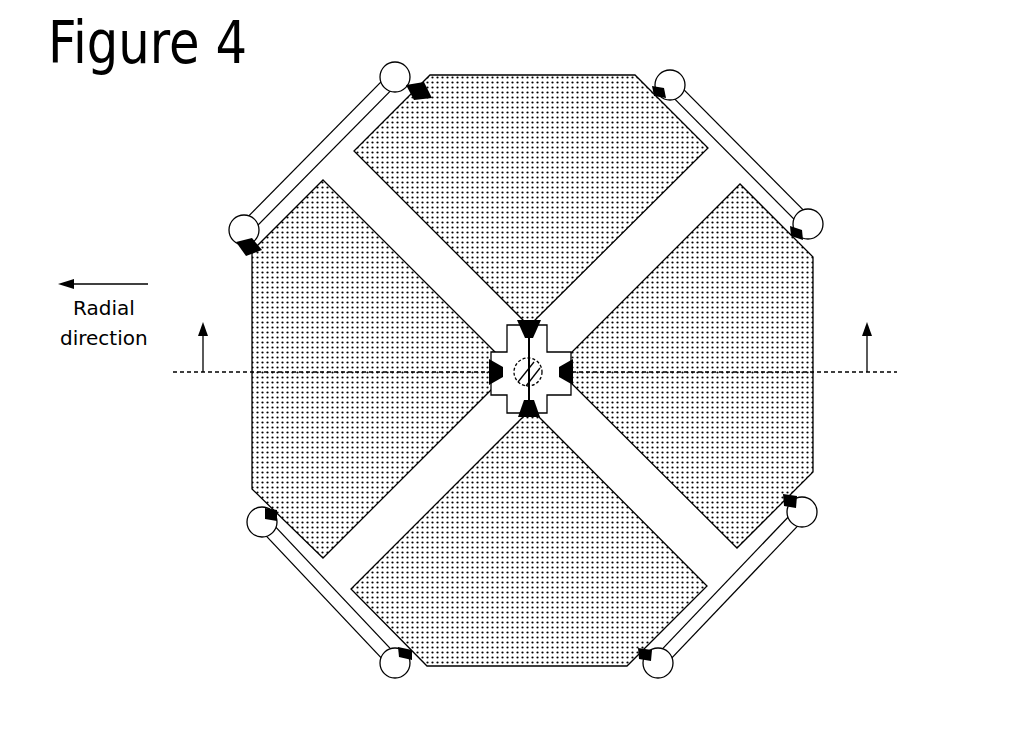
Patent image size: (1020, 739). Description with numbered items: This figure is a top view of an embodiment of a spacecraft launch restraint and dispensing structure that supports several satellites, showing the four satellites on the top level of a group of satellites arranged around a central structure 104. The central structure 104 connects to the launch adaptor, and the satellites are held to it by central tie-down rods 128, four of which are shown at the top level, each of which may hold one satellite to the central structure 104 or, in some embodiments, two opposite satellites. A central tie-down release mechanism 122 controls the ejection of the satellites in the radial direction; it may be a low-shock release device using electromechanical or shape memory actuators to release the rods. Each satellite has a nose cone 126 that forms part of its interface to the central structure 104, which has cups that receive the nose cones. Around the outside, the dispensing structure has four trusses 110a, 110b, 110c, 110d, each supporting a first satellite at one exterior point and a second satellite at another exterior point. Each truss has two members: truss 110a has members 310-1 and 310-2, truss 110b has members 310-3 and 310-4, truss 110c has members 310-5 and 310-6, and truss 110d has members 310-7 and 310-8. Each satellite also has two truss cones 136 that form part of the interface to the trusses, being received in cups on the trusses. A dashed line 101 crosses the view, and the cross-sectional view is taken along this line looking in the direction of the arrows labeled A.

The line 101 is at (237, 374).
The central structure 104 is at (553, 367).
The truss 110a is at (290, 133).
The truss 110b is at (760, 151).
The truss 110c is at (774, 604).
The truss 110d is at (262, 603).
The central tie-down release mechanism 122 is at (544, 350).
The nose cone 126 is at (573, 375).
The central tie-down rod 128 is at (505, 398).
The truss cone 136 is at (432, 90).
The member 310-1 is at (236, 220).
The member 310-2 is at (395, 62).
The member 310-3 is at (668, 70).
The member 310-4 is at (822, 233).
The member 310-5 is at (842, 520).
The member 310-6 is at (666, 677).
The member 310-7 is at (409, 674).
The member 310-8 is at (254, 510).